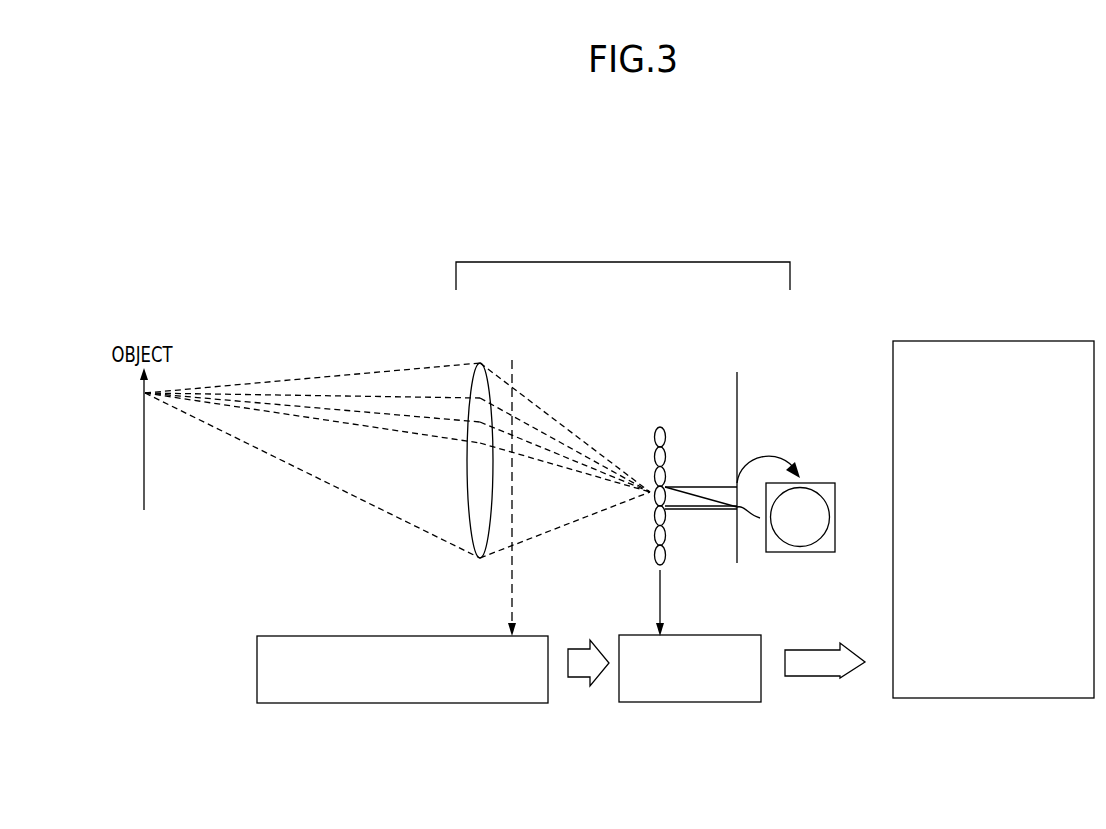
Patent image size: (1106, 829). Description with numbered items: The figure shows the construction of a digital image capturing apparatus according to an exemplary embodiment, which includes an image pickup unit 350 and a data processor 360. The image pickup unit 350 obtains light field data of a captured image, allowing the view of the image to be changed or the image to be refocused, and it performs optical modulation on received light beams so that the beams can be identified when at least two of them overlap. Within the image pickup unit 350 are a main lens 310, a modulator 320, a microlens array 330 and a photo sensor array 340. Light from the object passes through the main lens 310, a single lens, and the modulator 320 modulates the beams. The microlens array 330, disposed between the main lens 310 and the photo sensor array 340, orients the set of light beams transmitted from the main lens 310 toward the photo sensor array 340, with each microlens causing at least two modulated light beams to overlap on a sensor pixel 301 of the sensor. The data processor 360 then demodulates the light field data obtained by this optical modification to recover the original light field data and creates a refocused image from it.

The sensor detector element 301 is at (812, 487).
The main lens 310 is at (479, 367).
The modulator 320 is at (513, 377).
The microlens array 330 is at (660, 427).
The photo sensor array 340 is at (738, 400).
The image pickup unit 350 is at (622, 262).
The data processor 360 is at (993, 340).